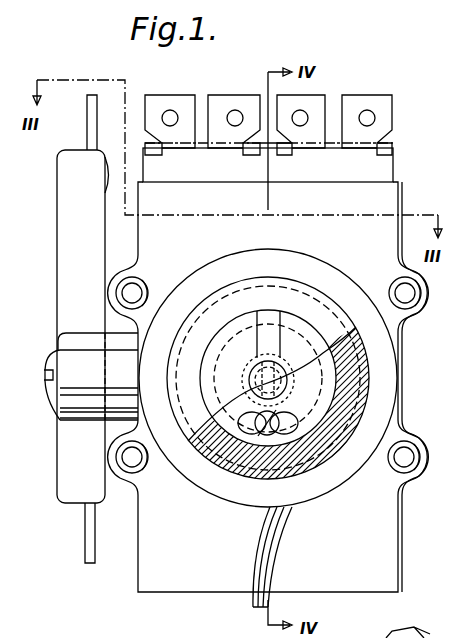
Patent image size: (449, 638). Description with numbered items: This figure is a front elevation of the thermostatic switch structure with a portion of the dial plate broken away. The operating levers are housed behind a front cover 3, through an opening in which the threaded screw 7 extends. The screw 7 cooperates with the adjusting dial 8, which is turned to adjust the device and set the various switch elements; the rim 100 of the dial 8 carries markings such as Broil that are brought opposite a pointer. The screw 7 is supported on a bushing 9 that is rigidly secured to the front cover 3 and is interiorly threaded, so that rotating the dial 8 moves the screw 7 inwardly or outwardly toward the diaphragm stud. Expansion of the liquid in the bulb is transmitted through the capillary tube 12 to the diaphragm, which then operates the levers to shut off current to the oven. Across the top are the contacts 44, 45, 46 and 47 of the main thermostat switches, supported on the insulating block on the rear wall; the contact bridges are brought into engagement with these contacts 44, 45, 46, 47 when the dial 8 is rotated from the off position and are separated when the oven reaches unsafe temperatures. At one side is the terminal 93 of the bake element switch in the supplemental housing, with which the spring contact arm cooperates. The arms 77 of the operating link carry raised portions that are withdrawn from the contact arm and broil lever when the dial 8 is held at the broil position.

The front cover 3 is at (396, 418).
The threaded screw 7 is at (284, 388).
The adjusting dial 8 is at (322, 303).
The bushing 9 is at (288, 398).
The capillary tube 12 is at (270, 545).
The contact 44 is at (165, 88).
The contact 45 is at (225, 88).
The contact 46 is at (286, 104).
The contact 47 is at (352, 105).
The arms of the operating link 77 is at (430, 628).
The terminal 93 is at (92, 133).
The rim of the dial 100 is at (390, 370).